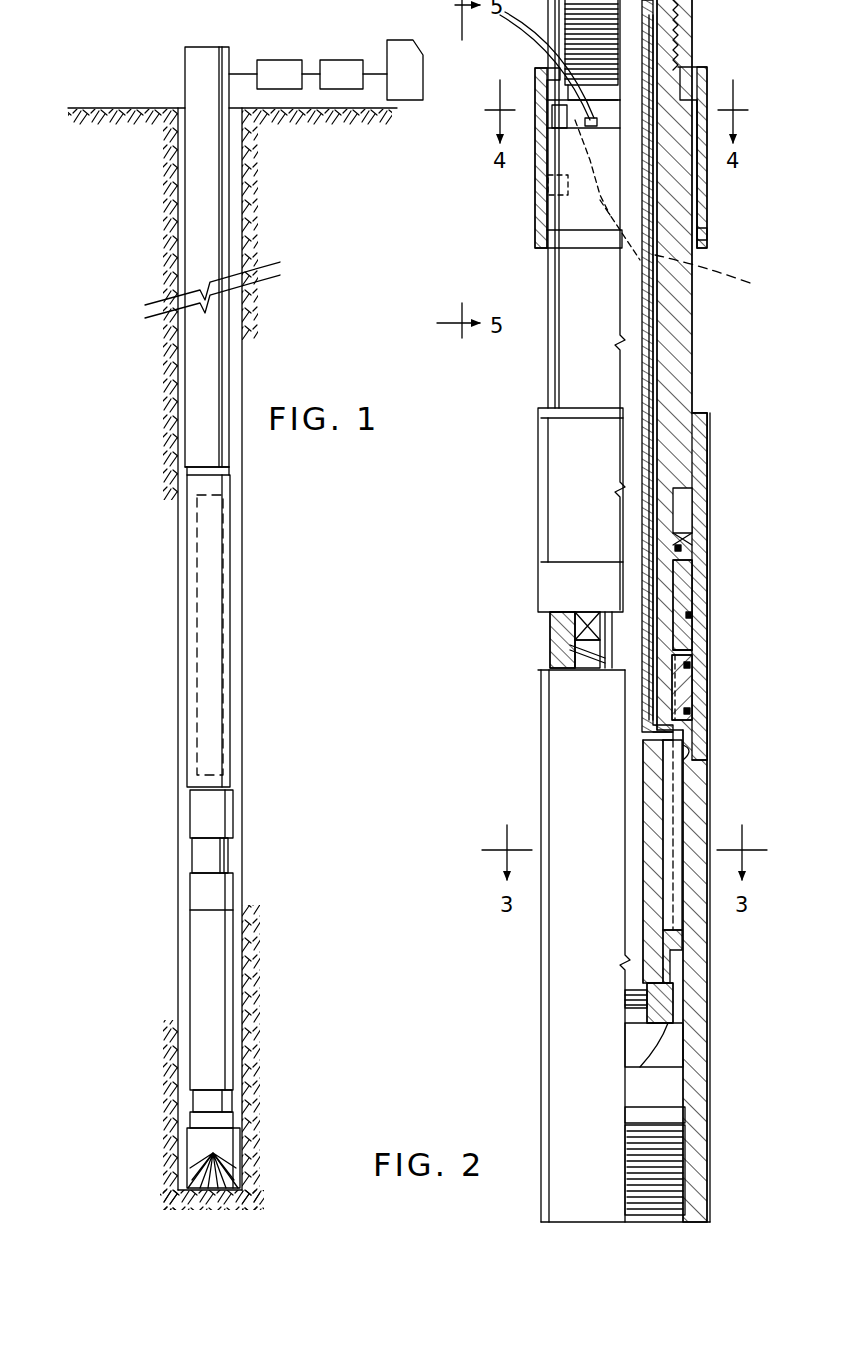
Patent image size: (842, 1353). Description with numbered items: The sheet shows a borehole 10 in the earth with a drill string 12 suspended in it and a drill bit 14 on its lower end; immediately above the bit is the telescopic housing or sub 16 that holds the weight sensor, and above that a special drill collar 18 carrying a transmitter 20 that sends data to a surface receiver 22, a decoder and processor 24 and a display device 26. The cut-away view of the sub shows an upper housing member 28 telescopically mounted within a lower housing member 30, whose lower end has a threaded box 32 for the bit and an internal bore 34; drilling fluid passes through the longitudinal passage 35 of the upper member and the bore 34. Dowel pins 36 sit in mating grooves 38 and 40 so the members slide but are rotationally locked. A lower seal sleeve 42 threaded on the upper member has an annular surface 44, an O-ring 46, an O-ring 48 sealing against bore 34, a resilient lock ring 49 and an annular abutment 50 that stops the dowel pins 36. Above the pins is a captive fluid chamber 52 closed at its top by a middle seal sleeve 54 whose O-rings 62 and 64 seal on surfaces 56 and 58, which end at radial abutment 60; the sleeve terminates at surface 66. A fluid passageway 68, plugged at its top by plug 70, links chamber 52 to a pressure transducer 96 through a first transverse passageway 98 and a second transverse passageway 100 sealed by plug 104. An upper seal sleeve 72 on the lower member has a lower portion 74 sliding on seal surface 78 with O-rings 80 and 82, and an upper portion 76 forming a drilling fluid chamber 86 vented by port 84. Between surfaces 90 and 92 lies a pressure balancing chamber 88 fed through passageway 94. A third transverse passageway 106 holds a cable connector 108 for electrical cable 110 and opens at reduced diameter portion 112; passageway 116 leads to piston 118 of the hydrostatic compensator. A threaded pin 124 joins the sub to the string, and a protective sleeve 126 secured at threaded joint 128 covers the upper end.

In FIG. 1, the borehole 10 is at (178, 228).
In FIG. 1, the drill string 12 is at (185, 199).
In FIG. 1, the drill bit 14 is at (198, 1148).
In FIG. 1, the telescopic housing or sub 16 is at (187, 856).
In FIG. 2, the telescopic housing or sub 16 is at (697, 340).
In FIG. 1, the special drill collar 18 is at (197, 562).
In FIG. 1, the transmitter 20 is at (210, 545).
In FIG. 1, the receiver 22 is at (270, 66).
In FIG. 1, the decoder and processor 24 is at (333, 66).
In FIG. 1, the display device 26 is at (400, 60).
In FIG. 1, the upper housing member 28 is at (220, 858).
In FIG. 2, the upper housing member 28 is at (567, 385).
In FIG. 1, the lower housing member 30 is at (210, 956).
In FIG. 2, the lower housing member 30 is at (572, 970).
In FIG. 2, the threaded opening or box 32 is at (655, 1160).
In FIG. 2, the internal bore 34 is at (662, 1058).
In FIG. 2, the longitudinal passage or bore 35 is at (640, 435).
In FIG. 2, the dowel pins 36 is at (665, 822).
In FIG. 2, the elongated mating groove 38 is at (650, 808).
In FIG. 2, the elongated mating groove 40 is at (690, 818).
In FIG. 2, the lower seal sleeve 42 is at (670, 955).
In FIG. 2, the annular surface 44 is at (660, 1062).
In FIG. 2, the O-ring 46 is at (672, 985).
In FIG. 2, the O-ring 48 is at (672, 1010).
In FIG. 2, the resilient lock ring 49 is at (655, 1012).
In FIG. 2, the annular abutment 50 is at (668, 930).
In FIG. 2, the captive fluid chamber 52 is at (660, 752).
In FIG. 2, the middle seal sleeve 54 is at (680, 690).
In FIG. 2, the seal surface 56 is at (690, 762).
In FIG. 2, the seal surface 58 is at (690, 742).
In FIG. 2, the radial abutment 60 is at (670, 760).
In FIG. 2, the O-ring 62 is at (690, 715).
In FIG. 2, the O-ring 64 is at (690, 668).
In FIG. 2, the surface 66 is at (652, 732).
In FIG. 2, the fluid passageway 68 is at (653, 345).
In FIG. 2, the plug 70 is at (663, 5).
In FIG. 2, the upper seal sleeve 72 is at (707, 462).
In FIG. 2, the lower portion of upper seal sleeve 74 is at (693, 585).
In FIG. 2, the upper portion of upper seal sleeve 76 is at (705, 430).
In FIG. 2, the external seal surface 78 is at (685, 650).
In FIG. 2, the O-ring 80 is at (681, 548).
In FIG. 2, the O-ring 82 is at (690, 615).
In FIG. 2, the vent port 84 is at (690, 545).
In FIG. 2, the annular drilling fluid chamber 86 is at (683, 510).
In FIG. 2, the pressure balancing fluid chamber 88 is at (562, 648).
In FIG. 2, the upper end of middle seal sleeve 90 is at (560, 657).
In FIG. 2, the lower end of upper seal sleeve 92 is at (555, 640).
In FIG. 2, the fluid passageway 94 is at (600, 665).
In FIG. 2, the pressure transducer 96 is at (645, 265).
In FIG. 2, the first transverse passageway 98 is at (640, 310).
In FIG. 2, the second transverse passageway 100 is at (717, 276).
In FIG. 2, the plug 104 is at (553, 222).
In FIG. 2, the third transverse passageway 106 is at (545, 205).
In FIG. 2, the cable connector 108 is at (535, 172).
In FIG. 2, the electrical cable 110 is at (540, 40).
In FIG. 2, the reduced diameter portion 112 is at (700, 100).
In FIG. 1, the passageway 116 is at (217, 812).
In FIG. 2, the piston 118 is at (540, 190).
In FIG. 2, the threaded pin 124 is at (680, 30).
In FIG. 2, the protective sleeve 126 is at (707, 198).
In FIG. 2, the threaded joint 128 is at (705, 242).